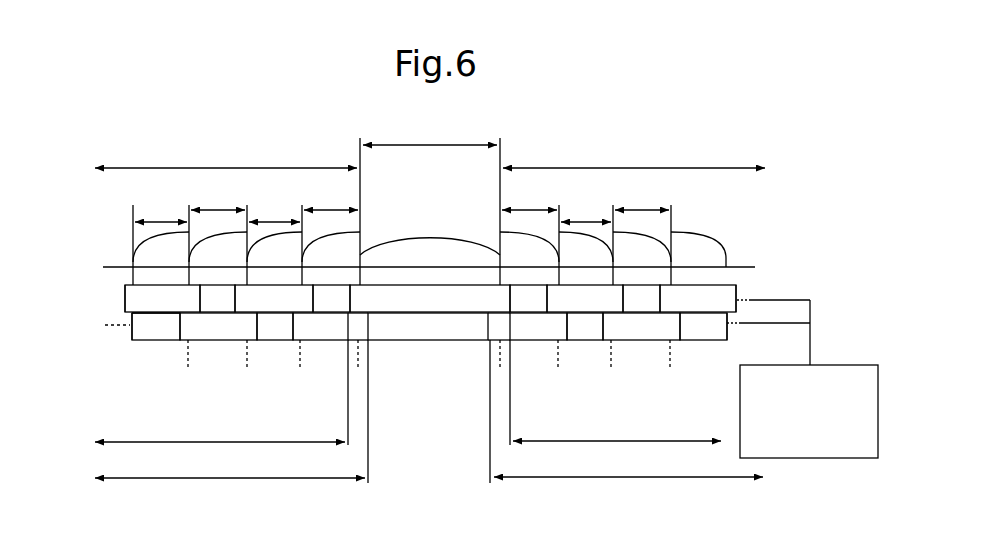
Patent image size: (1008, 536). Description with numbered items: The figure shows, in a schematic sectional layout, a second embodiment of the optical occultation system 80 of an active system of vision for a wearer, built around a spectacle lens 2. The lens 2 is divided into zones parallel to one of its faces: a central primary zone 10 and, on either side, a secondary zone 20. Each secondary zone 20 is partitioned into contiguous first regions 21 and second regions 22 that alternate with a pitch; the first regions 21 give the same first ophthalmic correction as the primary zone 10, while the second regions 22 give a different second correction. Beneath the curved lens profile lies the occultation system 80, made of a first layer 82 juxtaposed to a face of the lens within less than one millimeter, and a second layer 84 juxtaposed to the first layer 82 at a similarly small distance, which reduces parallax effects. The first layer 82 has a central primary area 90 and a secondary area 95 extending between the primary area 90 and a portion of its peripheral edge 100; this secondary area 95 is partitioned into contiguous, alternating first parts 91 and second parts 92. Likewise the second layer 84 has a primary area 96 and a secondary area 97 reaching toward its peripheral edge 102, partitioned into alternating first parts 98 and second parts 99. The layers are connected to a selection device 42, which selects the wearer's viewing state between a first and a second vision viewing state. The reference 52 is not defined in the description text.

The lens 2 is at (732, 230).
The primary zone 10 is at (430, 203).
The secondary zone 20 is at (430, 155).
The first regions 21 is at (373, 210).
The second regions 22 is at (430, 199).
The selection device 42 is at (809, 411).
The carrier surface 52 is at (154, 271).
The optical occultation system 80 is at (829, 308).
The first layer 82 is at (130, 313).
The second layer 84 is at (128, 334).
The primary area of the first layer 90 is at (430, 298).
The first parts of the first layer 91 is at (430, 298).
The second parts of the first layer 92 is at (430, 298).
The secondary area of the first layer 95 is at (408, 392).
The primary area of the second layer 96 is at (429, 326).
The secondary area of the second layer 97 is at (429, 411).
The first parts of the second layer 98 is at (429, 326).
The second parts of the second layer 99 is at (430, 326).
The peripheral edge of the first layer 100 is at (738, 317).
The peripheral edge of the second layer 102 is at (745, 290).